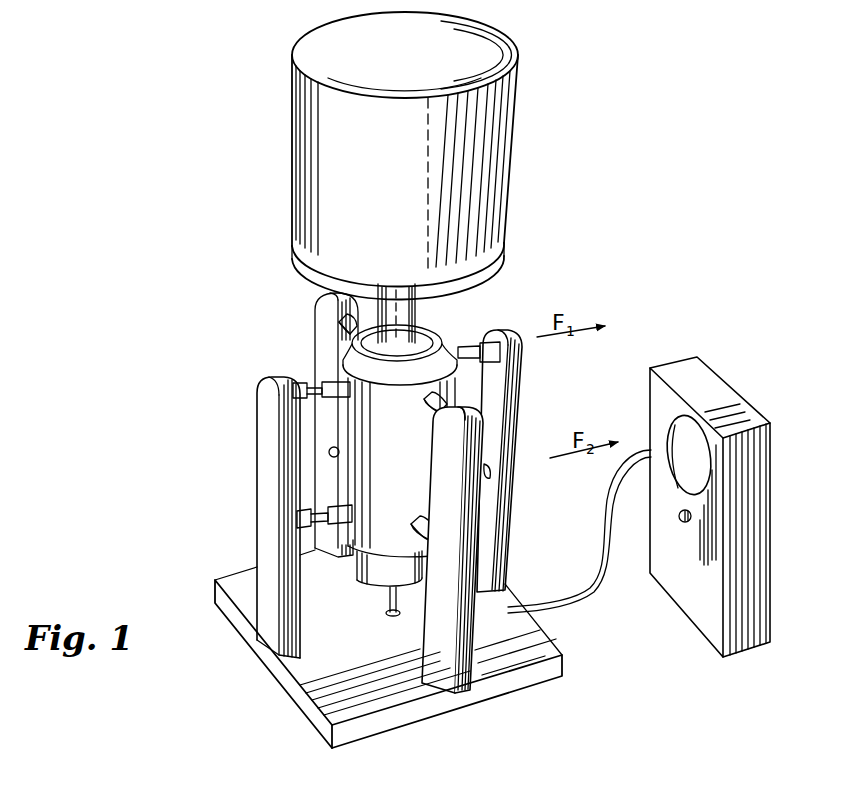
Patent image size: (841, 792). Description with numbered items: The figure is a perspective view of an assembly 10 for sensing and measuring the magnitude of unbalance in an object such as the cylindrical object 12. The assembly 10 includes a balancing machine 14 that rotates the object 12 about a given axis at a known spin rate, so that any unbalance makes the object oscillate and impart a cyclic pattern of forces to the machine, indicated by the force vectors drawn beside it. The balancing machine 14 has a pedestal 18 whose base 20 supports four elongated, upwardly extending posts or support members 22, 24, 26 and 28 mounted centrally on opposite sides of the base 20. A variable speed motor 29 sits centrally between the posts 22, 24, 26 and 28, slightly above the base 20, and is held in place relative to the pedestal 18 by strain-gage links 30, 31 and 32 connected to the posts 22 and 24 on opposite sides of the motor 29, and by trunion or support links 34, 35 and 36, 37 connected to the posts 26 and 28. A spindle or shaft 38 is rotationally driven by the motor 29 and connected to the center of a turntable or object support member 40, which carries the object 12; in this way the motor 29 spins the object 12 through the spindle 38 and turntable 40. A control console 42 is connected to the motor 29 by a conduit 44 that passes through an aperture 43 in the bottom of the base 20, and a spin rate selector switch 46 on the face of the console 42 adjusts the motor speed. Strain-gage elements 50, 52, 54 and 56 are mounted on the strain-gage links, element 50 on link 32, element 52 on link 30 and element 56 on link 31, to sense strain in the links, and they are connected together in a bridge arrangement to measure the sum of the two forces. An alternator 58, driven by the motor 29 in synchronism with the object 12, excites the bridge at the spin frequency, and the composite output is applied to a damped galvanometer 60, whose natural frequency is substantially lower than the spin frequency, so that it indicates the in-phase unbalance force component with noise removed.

The assembly 10 is at (562, 207).
The cylindrical object 12 is at (334, 192).
The balancing machine 14 is at (525, 399).
The pedestal 18 is at (240, 637).
The base 20 is at (280, 680).
The post or support member 22 is at (265, 398).
The post or support member 24 is at (497, 537).
The post or support member 26 is at (325, 304).
The post or support member 28 is at (470, 443).
The variable speed motor 29 is at (376, 444).
The strain-gage link 30 is at (300, 381).
The strain-gage link 31 is at (300, 540).
The strain-gage link 32 is at (476, 344).
The trunion or support link 34 is at (340, 322).
The trunion or support link 35 is at (333, 453).
The trunion or support link 36 is at (420, 432).
The trunion or support link 37 is at (413, 531).
The spindle or shaft 38 is at (395, 313).
The turntable or object support member 40 is at (322, 266).
The control console 42 is at (680, 586).
The aperture 43 is at (384, 613).
The conduit 44 is at (557, 594).
The spin rate selector switch 46 is at (680, 518).
The strain-gage element 50 is at (478, 347).
The strain-gage element 52 is at (310, 380).
The strain-gage element 54 is at (490, 472).
The strain-gage element 56 is at (313, 517).
The alternator 58 is at (360, 576).
The damped galvanometer 60 is at (680, 432).